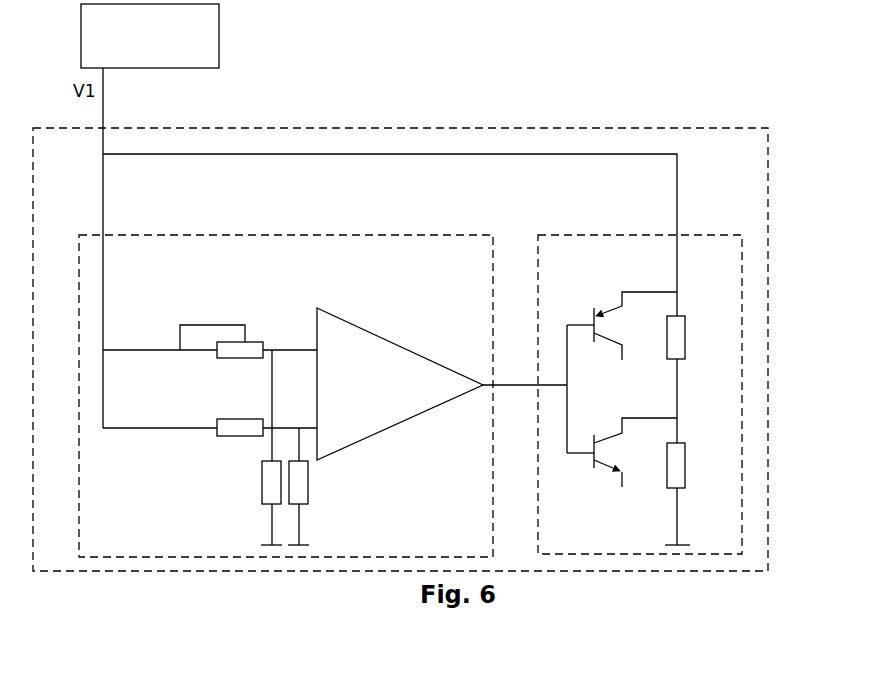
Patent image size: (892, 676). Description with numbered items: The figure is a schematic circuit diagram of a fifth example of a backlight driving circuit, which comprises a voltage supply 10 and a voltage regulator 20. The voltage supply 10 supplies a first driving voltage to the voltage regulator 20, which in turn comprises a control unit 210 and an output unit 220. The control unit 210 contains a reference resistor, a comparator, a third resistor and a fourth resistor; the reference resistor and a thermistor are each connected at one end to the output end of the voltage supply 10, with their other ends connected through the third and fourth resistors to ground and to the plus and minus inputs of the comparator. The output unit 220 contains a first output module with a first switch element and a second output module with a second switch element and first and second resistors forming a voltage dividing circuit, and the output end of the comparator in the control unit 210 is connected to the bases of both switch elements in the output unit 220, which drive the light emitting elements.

The voltage supply 10 is at (150, 36).
The voltage regulator 20 is at (400, 349).
The control unit 210 is at (323, 396).
The output unit 220 is at (640, 394).